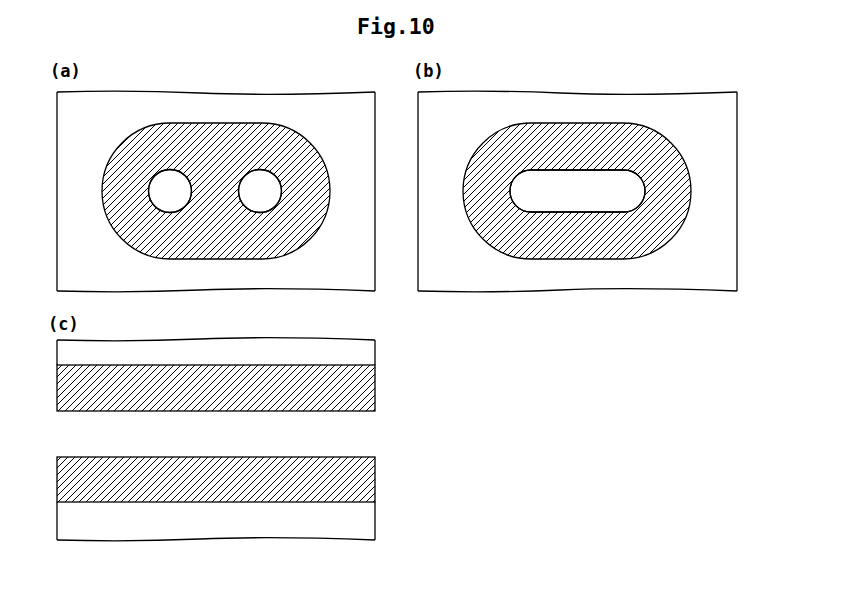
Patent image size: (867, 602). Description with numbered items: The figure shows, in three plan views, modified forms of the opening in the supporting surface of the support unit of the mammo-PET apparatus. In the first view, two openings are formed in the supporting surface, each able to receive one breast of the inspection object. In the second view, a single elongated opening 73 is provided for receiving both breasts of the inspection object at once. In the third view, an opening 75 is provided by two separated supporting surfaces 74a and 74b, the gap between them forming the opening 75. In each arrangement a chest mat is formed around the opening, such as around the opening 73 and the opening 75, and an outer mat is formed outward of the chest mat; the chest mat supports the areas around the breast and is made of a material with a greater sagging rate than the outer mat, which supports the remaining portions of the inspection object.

The opening 73 is at (567, 201).
The supporting surface 74a is at (253, 363).
The supporting surface 74b is at (253, 513).
The opening 75 is at (253, 442).